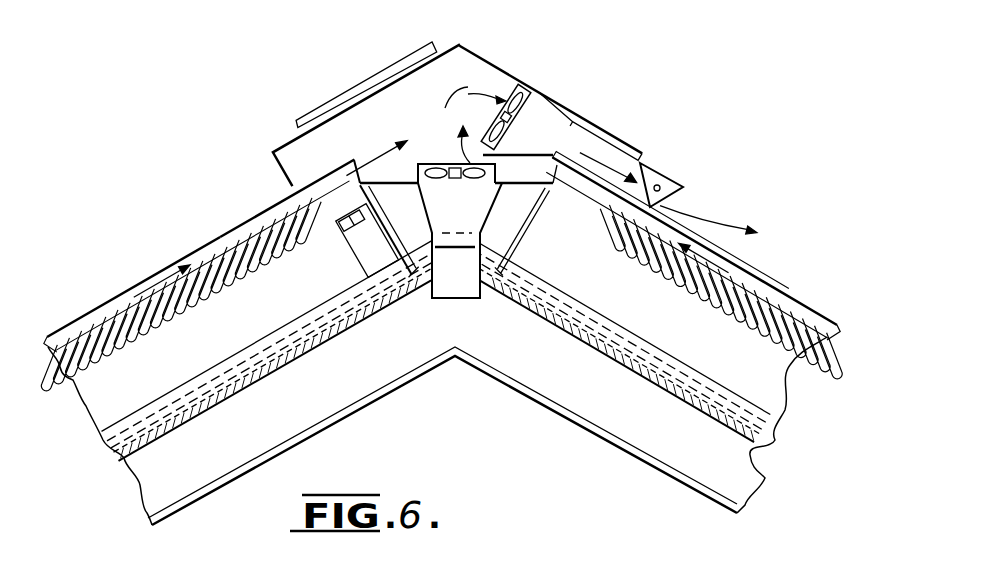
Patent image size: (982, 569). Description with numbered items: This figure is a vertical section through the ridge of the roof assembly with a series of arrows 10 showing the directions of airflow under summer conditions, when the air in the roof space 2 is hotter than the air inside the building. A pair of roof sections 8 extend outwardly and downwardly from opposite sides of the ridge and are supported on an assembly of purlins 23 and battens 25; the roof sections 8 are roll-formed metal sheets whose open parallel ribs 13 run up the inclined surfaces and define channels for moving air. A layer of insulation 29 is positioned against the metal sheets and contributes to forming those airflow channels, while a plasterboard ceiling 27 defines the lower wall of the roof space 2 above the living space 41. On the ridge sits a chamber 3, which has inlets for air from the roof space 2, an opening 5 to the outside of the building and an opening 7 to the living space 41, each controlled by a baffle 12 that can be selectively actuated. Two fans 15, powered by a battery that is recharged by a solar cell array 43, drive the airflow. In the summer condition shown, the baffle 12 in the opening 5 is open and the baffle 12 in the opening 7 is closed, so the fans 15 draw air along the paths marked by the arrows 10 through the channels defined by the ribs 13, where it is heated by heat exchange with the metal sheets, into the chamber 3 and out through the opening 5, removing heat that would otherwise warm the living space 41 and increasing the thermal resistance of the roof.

The roof space 2 is at (113, 394).
The chamber 3 is at (597, 120).
The opening 5 is at (600, 155).
The opening 7 is at (487, 298).
The roof section 8 is at (115, 297).
The air flow 10 is at (156, 280).
The baffle 12 is at (663, 187).
The rib 13 is at (240, 227).
The fan 15 is at (517, 82).
The purlin 23 is at (657, 428).
The batten 25 is at (517, 232).
The plasterboard ceiling 27 is at (157, 440).
The insulation 29 is at (173, 310).
The living space 41 is at (456, 465).
The solar cell array 43 is at (333, 117).